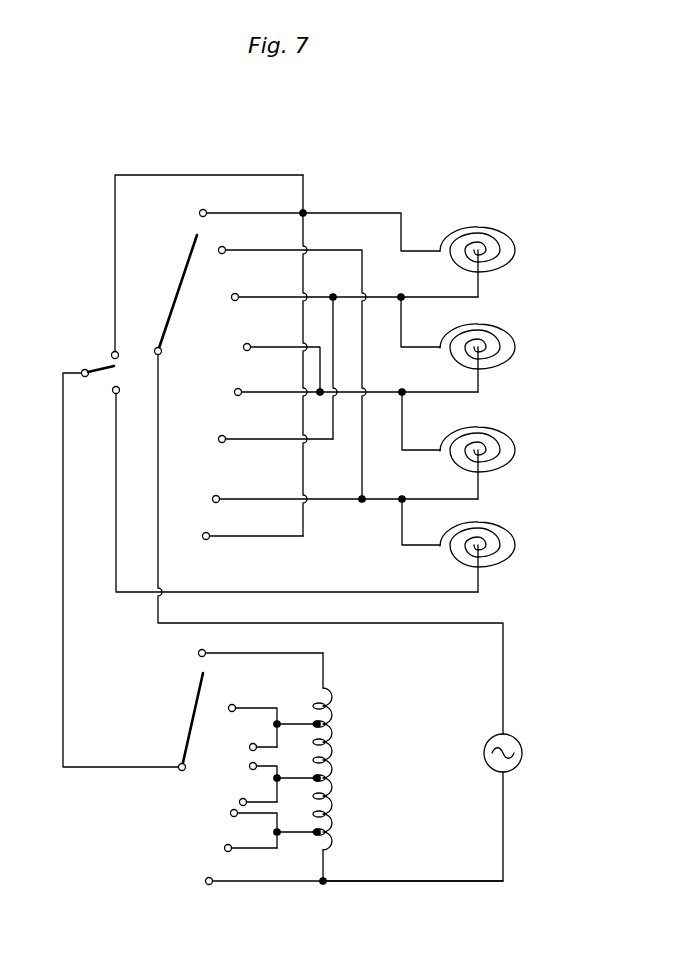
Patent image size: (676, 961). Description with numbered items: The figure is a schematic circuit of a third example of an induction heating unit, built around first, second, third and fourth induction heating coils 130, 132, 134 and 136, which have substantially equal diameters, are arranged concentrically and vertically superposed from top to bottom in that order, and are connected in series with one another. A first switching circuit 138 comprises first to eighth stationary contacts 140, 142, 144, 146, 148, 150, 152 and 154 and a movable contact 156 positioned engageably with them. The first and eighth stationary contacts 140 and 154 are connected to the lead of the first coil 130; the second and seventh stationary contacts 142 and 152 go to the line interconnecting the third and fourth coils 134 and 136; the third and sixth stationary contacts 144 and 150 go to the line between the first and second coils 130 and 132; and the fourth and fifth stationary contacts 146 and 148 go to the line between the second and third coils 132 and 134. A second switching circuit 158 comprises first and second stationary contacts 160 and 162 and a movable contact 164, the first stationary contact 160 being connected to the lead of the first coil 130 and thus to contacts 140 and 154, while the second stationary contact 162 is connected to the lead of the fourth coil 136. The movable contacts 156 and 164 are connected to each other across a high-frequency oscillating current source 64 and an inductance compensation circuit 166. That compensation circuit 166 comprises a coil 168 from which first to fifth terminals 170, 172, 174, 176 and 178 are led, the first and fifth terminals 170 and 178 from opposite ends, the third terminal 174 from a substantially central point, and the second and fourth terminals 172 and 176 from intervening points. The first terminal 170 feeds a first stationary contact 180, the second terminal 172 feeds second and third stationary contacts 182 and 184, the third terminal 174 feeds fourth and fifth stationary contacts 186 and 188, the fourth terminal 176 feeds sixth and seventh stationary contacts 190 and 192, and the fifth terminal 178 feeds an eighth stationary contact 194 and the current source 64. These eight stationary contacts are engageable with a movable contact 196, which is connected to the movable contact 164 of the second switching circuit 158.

The high-frequency oscillating current source 64 is at (523, 753).
The first induction heating coil 130 is at (516, 250).
The second induction heating coil 132 is at (516, 347).
The third induction heating coil 134 is at (516, 450).
The fourth induction heating coil 136 is at (516, 545).
The first switching circuit 138 is at (213, 381).
The first stationary contact 140 is at (206, 209).
The second stationary contact 142 is at (225, 246).
The third stationary contact 144 is at (238, 293).
The fourth stationary contact 146 is at (259, 337).
The fifth stationary contact 148 is at (241, 388).
The sixth stationary contact 150 is at (225, 435).
The seventh stationary contact 152 is at (219, 495).
The eighth stationary contact 154 is at (209, 532).
The movable contact 156 is at (182, 277).
The second switching circuit 158 is at (97, 343).
The first stationary contact 160 is at (118, 351).
The second stationary contact 162 is at (113, 392).
The movable contact 164 is at (83, 367).
The inductance compensation circuit 166 is at (170, 807).
The coil 168 is at (334, 817).
The first terminal 170 is at (325, 678).
The second terminal 172 is at (296, 720).
The third terminal 174 is at (296, 775).
The fourth terminal 176 is at (295, 836).
The fifth terminal 178 is at (325, 867).
The first stationary contact 180 is at (199, 654).
The second stationary contact 182 is at (235, 704).
The third stationary contact 184 is at (249, 747).
The fourth stationary contact 186 is at (250, 766).
The fifth stationary contact 188 is at (239, 802).
The sixth stationary contact 190 is at (231, 816).
The seventh stationary contact 192 is at (225, 850).
The eighth stationary contact 194 is at (207, 883).
The movable contact 196 is at (191, 716).